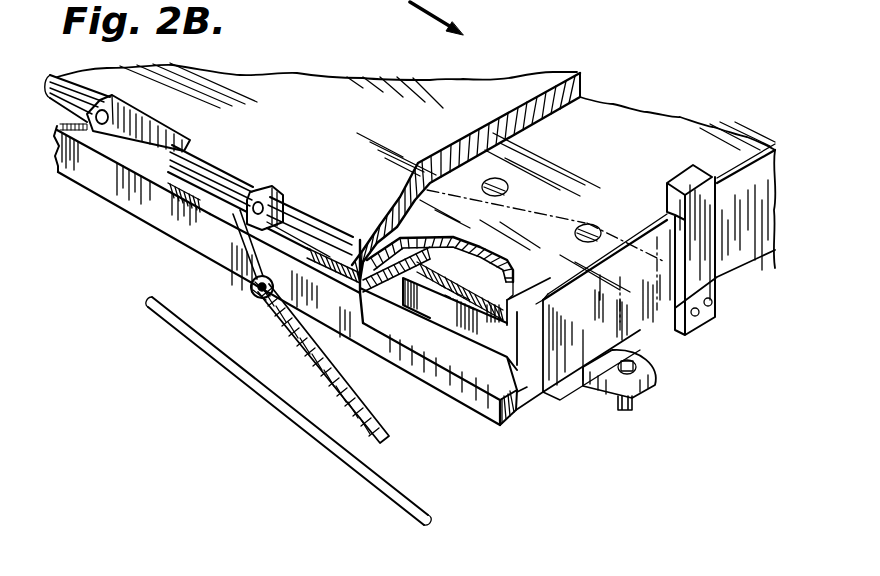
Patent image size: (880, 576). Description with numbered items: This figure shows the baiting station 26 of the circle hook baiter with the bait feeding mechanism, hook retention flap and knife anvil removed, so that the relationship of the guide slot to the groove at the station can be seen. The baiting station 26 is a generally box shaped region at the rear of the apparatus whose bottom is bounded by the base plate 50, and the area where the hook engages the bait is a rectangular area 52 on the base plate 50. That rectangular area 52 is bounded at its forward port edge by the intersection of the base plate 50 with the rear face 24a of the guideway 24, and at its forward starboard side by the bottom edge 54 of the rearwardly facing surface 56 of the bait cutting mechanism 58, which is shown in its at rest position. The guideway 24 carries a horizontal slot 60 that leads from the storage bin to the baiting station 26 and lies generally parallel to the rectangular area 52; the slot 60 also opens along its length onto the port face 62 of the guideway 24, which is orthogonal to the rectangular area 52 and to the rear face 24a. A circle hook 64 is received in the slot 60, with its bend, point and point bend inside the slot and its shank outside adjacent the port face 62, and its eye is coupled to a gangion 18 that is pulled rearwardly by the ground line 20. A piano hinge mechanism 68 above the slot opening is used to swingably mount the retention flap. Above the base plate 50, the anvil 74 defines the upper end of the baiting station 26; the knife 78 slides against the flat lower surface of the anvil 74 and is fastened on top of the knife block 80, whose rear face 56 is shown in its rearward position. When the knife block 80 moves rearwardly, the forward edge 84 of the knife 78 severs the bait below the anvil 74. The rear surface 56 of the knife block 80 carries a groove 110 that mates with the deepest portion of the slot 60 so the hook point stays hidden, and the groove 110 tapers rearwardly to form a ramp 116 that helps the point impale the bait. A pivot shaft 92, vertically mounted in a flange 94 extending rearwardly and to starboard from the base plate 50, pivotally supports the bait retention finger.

The gangion 18 is at (320, 362).
The ground line 20 is at (282, 406).
The guideway 24 is at (186, 116).
The rear face of the guideway 24a is at (366, 326).
The baiting station 26 is at (496, 376).
The base plate 50 is at (484, 406).
The rectangular area 52 is at (463, 368).
The bottom edge 54 is at (527, 387).
The rearwardly facing surface 56 is at (541, 335).
The bait cutting mechanism 58 is at (632, 132).
The horizontal slot 60 is at (106, 148).
The port face 62 is at (152, 219).
The circle hook 64 is at (236, 250).
The piano hinge mechanism 68 is at (214, 170).
The anvil 74 is at (405, 236).
The knife 78 is at (322, 265).
The knife block 80 is at (594, 333).
The forward edge of the knife 84 is at (320, 264).
The pivot shaft 92 is at (632, 402).
The flange 94 is at (634, 382).
The groove 110 is at (416, 312).
The ramp 116 is at (452, 340).